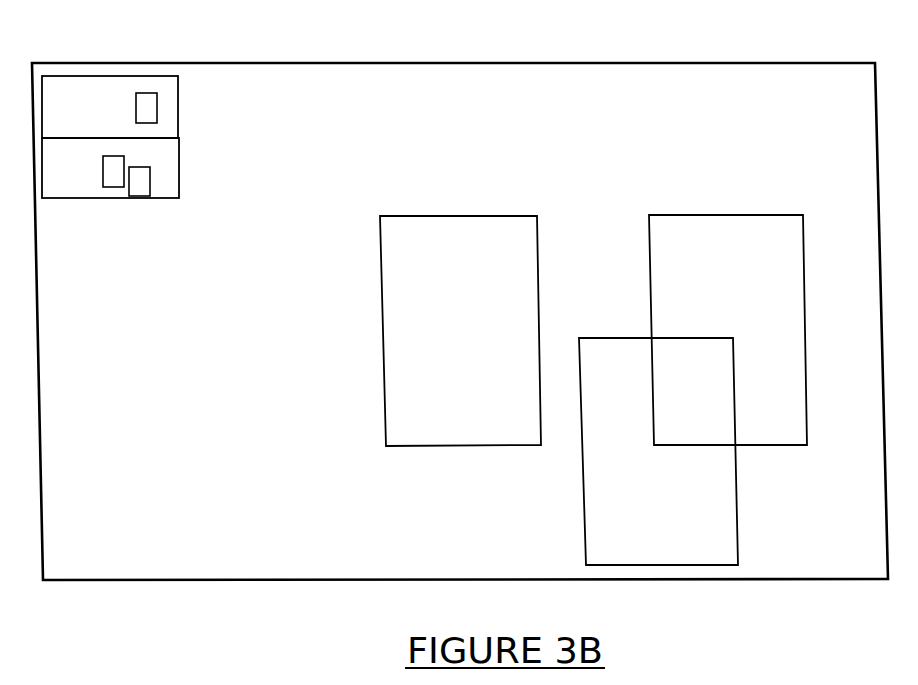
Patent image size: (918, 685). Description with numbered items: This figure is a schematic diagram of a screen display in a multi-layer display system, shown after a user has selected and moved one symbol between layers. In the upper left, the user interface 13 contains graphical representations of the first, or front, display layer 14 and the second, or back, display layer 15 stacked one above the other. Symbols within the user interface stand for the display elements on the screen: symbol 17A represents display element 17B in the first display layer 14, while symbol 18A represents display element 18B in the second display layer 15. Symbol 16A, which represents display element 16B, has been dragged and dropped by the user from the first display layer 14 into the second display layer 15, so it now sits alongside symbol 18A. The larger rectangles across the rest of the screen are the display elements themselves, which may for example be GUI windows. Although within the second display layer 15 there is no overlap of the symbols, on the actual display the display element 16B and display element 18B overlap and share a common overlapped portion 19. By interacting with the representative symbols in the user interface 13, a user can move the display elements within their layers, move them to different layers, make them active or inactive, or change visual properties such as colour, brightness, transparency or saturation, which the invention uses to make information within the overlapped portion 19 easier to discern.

The user interface 13 is at (153, 253).
The first display layer 14 is at (178, 97).
The second display layer 15 is at (179, 183).
The symbol 16A is at (150, 183).
The symbol 17A is at (108, 183).
The symbol 18A is at (147, 93).
The display element 16B is at (583, 492).
The display element 17B is at (420, 216).
The display element 18B is at (737, 215).
The overlapped portion 19 is at (673, 368).